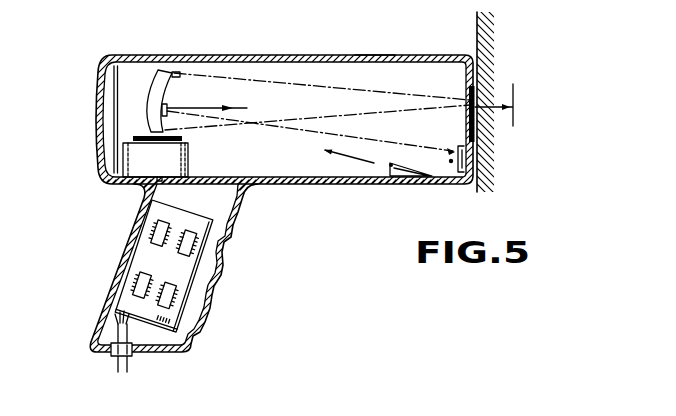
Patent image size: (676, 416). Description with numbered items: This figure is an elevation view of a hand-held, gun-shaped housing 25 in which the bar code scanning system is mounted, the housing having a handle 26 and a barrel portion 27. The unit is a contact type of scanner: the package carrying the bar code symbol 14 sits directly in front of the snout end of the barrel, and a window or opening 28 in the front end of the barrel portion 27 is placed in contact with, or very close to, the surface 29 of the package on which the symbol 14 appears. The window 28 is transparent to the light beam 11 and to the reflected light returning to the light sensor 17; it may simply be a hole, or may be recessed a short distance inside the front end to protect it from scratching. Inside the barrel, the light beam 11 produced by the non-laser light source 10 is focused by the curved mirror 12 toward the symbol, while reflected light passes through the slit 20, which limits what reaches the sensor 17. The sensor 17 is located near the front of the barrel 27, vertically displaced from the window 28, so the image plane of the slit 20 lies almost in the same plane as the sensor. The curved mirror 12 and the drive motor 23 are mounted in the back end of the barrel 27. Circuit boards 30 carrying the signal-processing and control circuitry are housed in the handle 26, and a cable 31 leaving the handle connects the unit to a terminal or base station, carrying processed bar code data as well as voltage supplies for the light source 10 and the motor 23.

The light source 10 is at (391, 167).
The light beam 11 is at (335, 156).
The curved mirror 12 is at (176, 73).
The bar code symbol 14 is at (478, 88).
The light sensor 17 is at (456, 176).
The slit 20 is at (447, 162).
The drive motor 23 is at (108, 172).
The housing 25 is at (373, 54).
The handle 26 is at (214, 288).
The barrel portion 27 is at (307, 54).
The window 28 is at (467, 88).
The surface 29 is at (477, 25).
The circuit boards 30 is at (209, 248).
The cable 31 is at (98, 325).